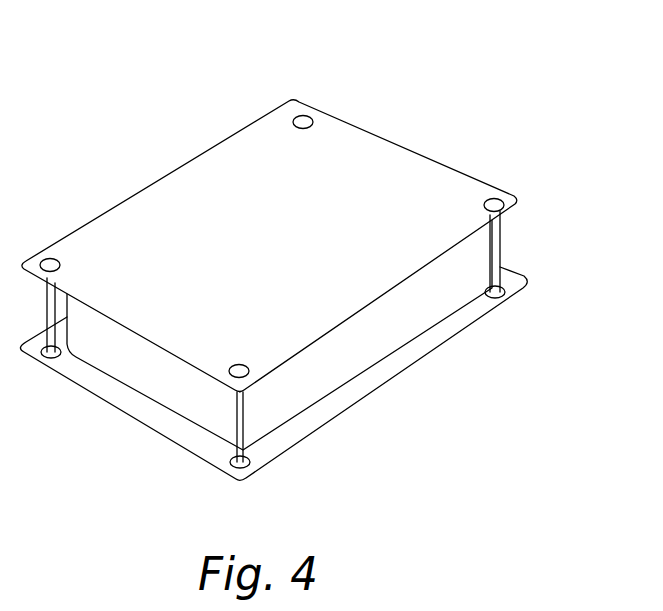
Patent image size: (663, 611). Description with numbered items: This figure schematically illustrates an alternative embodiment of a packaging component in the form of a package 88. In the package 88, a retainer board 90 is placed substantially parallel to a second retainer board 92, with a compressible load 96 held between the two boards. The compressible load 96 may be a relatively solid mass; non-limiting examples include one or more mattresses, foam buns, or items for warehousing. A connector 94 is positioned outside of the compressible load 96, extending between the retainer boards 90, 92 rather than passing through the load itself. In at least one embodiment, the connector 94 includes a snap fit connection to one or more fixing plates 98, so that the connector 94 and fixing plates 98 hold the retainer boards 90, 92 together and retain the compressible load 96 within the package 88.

The package 88 is at (142, 107).
The retainer board 90 is at (397, 150).
The retainer board 92 is at (470, 320).
The connector 94 is at (500, 258).
The compressible load 96 is at (347, 368).
The fixing plate 98 is at (507, 197).